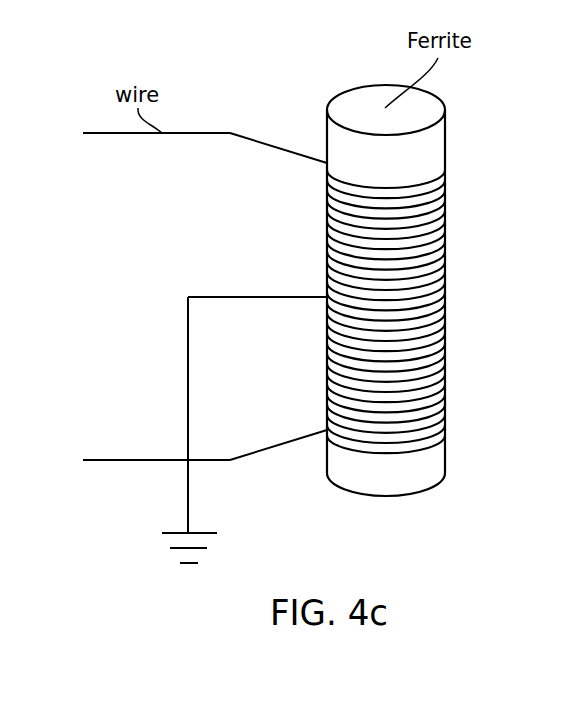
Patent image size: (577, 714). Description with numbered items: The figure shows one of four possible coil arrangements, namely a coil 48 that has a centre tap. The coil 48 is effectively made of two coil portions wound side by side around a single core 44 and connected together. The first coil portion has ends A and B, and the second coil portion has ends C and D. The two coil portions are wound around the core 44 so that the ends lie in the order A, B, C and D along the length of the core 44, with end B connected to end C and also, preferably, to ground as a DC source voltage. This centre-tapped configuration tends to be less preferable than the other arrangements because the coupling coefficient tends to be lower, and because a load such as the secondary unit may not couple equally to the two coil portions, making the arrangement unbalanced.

The core 44 is at (372, 108).
The coil 48 is at (421, 178).
The end A is at (278, 138).
The end B is at (327, 296).
The end C is at (327, 299).
The end D is at (278, 456).